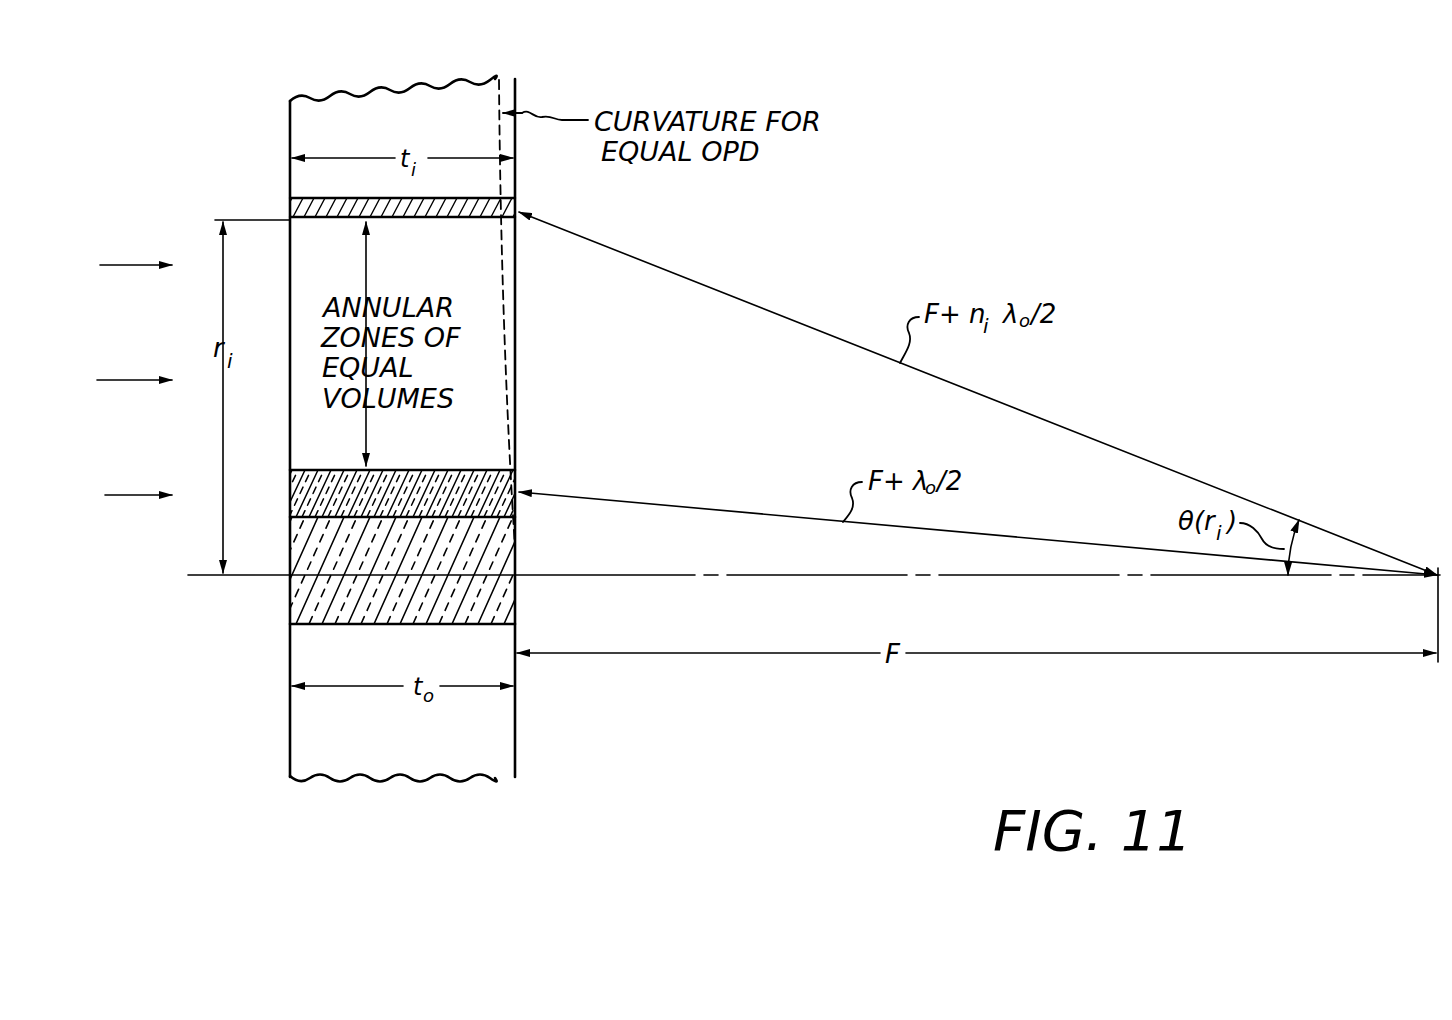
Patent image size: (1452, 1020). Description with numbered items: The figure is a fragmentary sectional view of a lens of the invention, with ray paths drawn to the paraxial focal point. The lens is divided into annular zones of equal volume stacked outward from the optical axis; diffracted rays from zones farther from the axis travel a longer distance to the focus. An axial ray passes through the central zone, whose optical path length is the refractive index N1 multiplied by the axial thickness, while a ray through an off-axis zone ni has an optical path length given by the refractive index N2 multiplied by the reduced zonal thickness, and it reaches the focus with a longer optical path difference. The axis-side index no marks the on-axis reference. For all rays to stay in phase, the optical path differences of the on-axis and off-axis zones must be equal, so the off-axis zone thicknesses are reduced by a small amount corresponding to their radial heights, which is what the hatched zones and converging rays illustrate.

The refractive index of the axial zone N1 is at (298, 598).
The refractive index of the off-axis zone N2 is at (442, 470).
The off-axis zone ni is at (526, 206).
The refractive index of central zone no is at (520, 576).